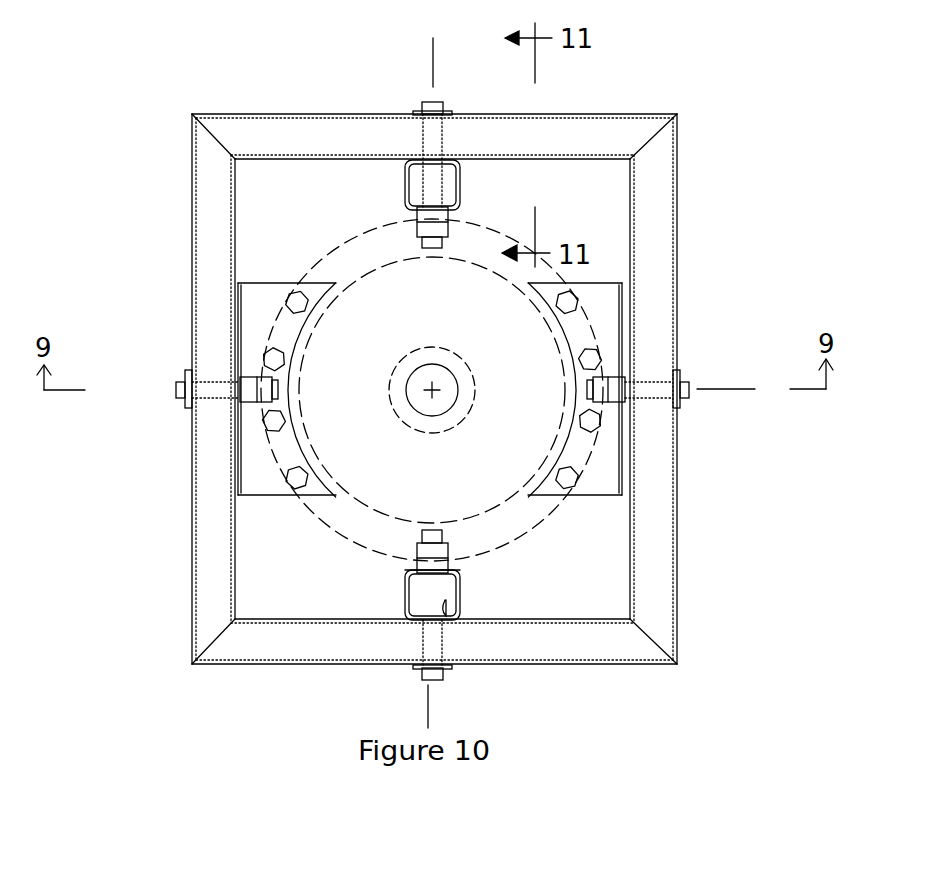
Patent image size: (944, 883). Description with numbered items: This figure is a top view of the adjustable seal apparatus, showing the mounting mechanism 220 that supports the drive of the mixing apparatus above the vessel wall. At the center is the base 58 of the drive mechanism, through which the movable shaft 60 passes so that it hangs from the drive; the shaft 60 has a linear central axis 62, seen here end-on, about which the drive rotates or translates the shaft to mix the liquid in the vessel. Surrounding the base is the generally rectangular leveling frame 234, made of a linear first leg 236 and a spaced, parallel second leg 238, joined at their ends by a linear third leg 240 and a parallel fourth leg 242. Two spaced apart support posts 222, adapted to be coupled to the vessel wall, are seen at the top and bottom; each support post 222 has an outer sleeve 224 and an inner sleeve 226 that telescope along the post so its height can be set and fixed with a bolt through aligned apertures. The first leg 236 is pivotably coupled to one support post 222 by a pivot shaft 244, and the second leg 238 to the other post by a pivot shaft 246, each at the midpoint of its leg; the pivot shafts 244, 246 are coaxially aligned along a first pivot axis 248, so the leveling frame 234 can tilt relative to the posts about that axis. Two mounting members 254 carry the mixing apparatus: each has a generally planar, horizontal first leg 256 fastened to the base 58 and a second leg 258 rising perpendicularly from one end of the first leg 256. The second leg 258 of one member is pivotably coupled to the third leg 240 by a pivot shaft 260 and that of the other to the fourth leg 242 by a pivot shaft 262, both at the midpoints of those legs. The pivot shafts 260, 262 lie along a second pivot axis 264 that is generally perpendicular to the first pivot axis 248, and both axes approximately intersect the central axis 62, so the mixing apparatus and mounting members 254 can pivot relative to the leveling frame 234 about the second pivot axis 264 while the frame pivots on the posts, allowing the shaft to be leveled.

The base 58 is at (378, 556).
The movable shaft 60 is at (455, 405).
The central axis 62 is at (436, 387).
The mounting mechanism 220 is at (734, 74).
The support post 222 is at (465, 183).
The outer sleeve 224 is at (458, 580).
The inner sleeve 226 is at (442, 620).
The leveling frame 234 is at (683, 161).
The first leg 236 is at (566, 650).
The second leg 238 is at (573, 128).
The third leg 240 is at (200, 563).
The fourth leg 242 is at (655, 563).
The pivot shaft 244 is at (447, 645).
The pivot shaft 246 is at (442, 133).
The first pivot axis 248 is at (428, 705).
The mounting member 254 is at (258, 282).
The first leg 256 is at (262, 482).
The second leg 258 is at (245, 460).
The pivot shaft 260 is at (172, 352).
The pivot shaft 262 is at (675, 352).
The second pivot axis 264 is at (735, 389).